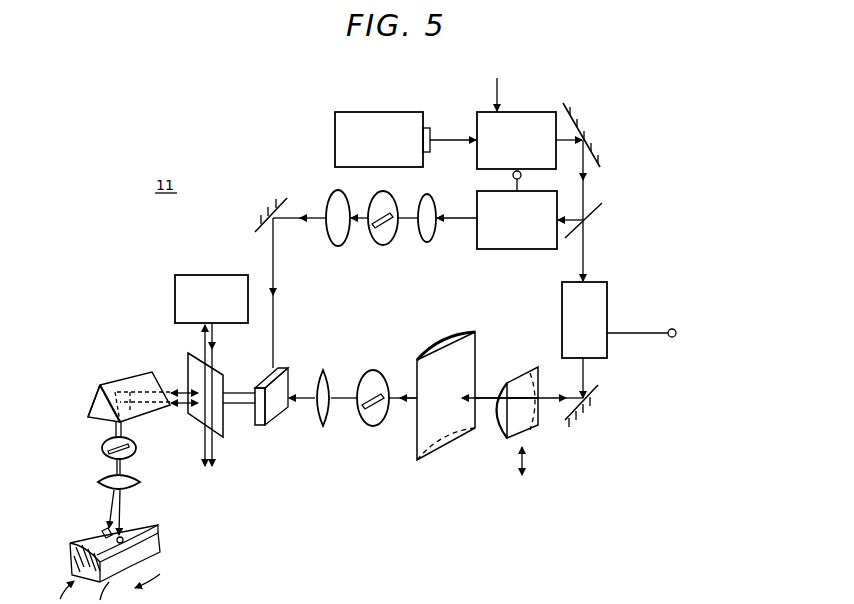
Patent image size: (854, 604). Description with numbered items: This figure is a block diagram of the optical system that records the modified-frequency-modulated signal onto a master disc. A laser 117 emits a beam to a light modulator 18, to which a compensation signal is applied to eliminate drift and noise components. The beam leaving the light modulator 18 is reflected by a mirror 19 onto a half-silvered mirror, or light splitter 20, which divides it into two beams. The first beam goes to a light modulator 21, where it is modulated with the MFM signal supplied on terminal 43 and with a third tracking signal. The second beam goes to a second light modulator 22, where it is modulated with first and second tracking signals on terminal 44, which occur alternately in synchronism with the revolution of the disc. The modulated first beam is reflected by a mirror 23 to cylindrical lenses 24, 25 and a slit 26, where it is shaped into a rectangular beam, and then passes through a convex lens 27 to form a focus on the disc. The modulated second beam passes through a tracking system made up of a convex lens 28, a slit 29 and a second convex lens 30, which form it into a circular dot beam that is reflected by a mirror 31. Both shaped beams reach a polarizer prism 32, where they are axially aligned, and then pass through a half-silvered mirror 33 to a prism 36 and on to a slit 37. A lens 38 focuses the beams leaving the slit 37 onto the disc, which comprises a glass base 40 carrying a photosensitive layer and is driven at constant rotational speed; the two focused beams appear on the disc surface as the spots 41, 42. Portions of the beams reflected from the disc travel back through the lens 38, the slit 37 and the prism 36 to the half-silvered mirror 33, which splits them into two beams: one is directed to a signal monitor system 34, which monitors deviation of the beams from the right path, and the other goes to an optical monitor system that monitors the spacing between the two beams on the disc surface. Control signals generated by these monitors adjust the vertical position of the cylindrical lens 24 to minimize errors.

The laser 117 is at (378, 111).
The light modulator 18 is at (522, 111).
The mirror 19 is at (572, 116).
The light splitter 20 is at (603, 207).
The light modulator 21 is at (600, 298).
The second light modulator 22 is at (515, 251).
The mirror 23 is at (596, 391).
The cylindrical lens 24 is at (524, 372).
The cylindrical lens 25 is at (438, 333).
The slit 26 is at (372, 369).
The convex lens 27 is at (324, 368).
The convex lens 28 is at (427, 243).
The slit 29 is at (383, 246).
The second convex lens 30 is at (338, 247).
The mirror 31 is at (288, 200).
The polarizer prism 32 is at (286, 368).
The half-silvered mirror 33 is at (223, 372).
The signal monitor system 34 is at (212, 274).
The prism 36 is at (124, 378).
The slit 37 is at (136, 448).
The lens 38 is at (136, 481).
The glass base 40 is at (160, 546).
The recording spot 41 is at (100, 535).
The reading spot 42 is at (122, 540).
The terminal 43 is at (654, 334).
The terminal 44 is at (511, 176).